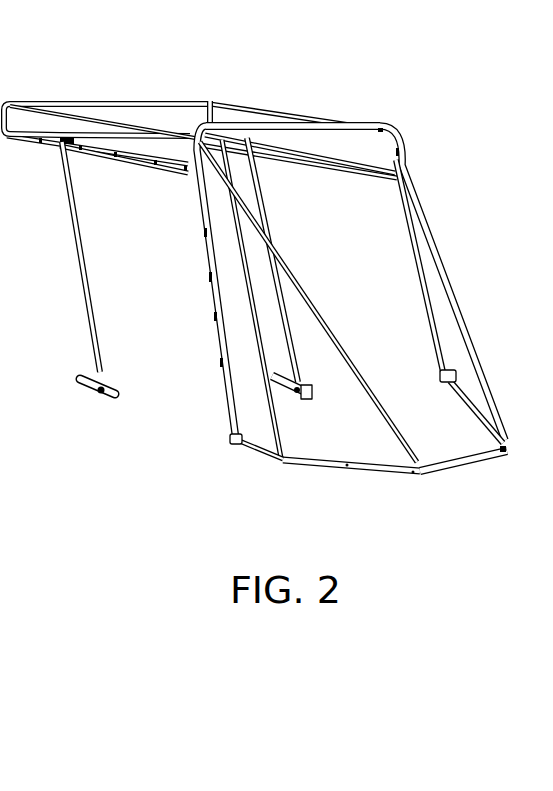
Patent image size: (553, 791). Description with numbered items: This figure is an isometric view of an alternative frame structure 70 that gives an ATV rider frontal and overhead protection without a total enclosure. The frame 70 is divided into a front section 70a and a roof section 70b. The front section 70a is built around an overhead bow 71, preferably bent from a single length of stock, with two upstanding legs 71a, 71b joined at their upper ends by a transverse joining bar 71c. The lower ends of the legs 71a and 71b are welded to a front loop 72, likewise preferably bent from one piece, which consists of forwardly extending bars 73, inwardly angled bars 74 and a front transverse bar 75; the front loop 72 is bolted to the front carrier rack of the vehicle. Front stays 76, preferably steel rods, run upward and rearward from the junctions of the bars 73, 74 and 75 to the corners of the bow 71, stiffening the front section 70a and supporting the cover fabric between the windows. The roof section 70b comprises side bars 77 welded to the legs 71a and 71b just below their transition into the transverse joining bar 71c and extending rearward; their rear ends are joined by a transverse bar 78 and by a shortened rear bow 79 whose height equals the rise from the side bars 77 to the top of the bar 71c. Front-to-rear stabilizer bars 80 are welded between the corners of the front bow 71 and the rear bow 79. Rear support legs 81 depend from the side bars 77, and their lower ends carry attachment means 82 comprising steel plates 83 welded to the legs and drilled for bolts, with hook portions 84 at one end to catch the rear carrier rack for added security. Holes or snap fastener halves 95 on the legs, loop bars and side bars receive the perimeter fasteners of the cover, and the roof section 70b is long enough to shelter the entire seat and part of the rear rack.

The frame structure 70 is at (460, 143).
The front section 70a is at (473, 326).
The roof section 70b is at (168, 92).
The overhead bow 71 is at (337, 118).
The upstanding leg 71a is at (413, 262).
The upstanding leg 71b is at (209, 292).
The transverse joining bar 71c is at (313, 128).
The front loop 72 is at (371, 480).
The forwardly extending bar 73 is at (243, 450).
The inwardly angled bar 74 is at (323, 466).
The front transverse bar 75 is at (450, 468).
The front stay 76 is at (381, 414).
The side bar 77 is at (127, 158).
The transverse bar 78 is at (57, 145).
The rear bow 79 is at (43, 100).
The stabilizer bar 80 is at (103, 123).
The rear support leg 81 is at (76, 283).
The attachment means 82 is at (76, 391).
The steel plate 83 is at (90, 393).
The hook portion 84 is at (121, 398).
The snap fastener half 95 is at (200, 232).